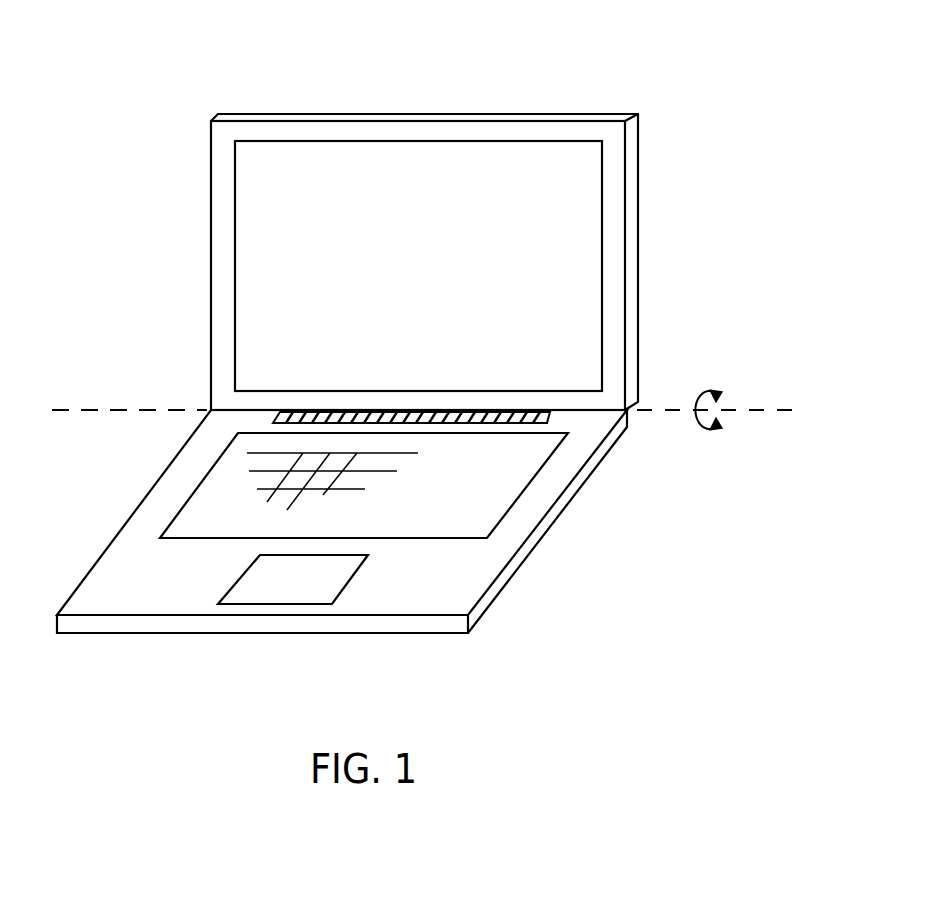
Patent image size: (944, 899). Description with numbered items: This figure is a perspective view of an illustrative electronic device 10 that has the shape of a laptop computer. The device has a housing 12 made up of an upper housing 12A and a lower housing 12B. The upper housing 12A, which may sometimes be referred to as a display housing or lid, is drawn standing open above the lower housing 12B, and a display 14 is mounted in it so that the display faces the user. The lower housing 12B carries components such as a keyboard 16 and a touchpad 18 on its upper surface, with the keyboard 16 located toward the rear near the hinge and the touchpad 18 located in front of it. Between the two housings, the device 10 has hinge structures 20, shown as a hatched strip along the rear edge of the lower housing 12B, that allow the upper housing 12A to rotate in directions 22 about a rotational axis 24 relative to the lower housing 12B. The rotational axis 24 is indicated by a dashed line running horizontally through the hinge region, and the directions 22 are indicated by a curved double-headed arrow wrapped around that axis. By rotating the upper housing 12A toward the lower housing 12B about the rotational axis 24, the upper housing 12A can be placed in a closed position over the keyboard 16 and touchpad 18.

The electronic device 10 is at (665, 56).
The housing 12 is at (638, 322).
The upper housing 12A is at (196, 121).
The lower housing 12B is at (209, 414).
The display 14 is at (578, 247).
The keyboard 16 is at (532, 482).
The touchpad 18 is at (297, 592).
The hinge structures 20 is at (553, 415).
The directions 22 is at (712, 430).
The rotational axis 24 is at (128, 410).